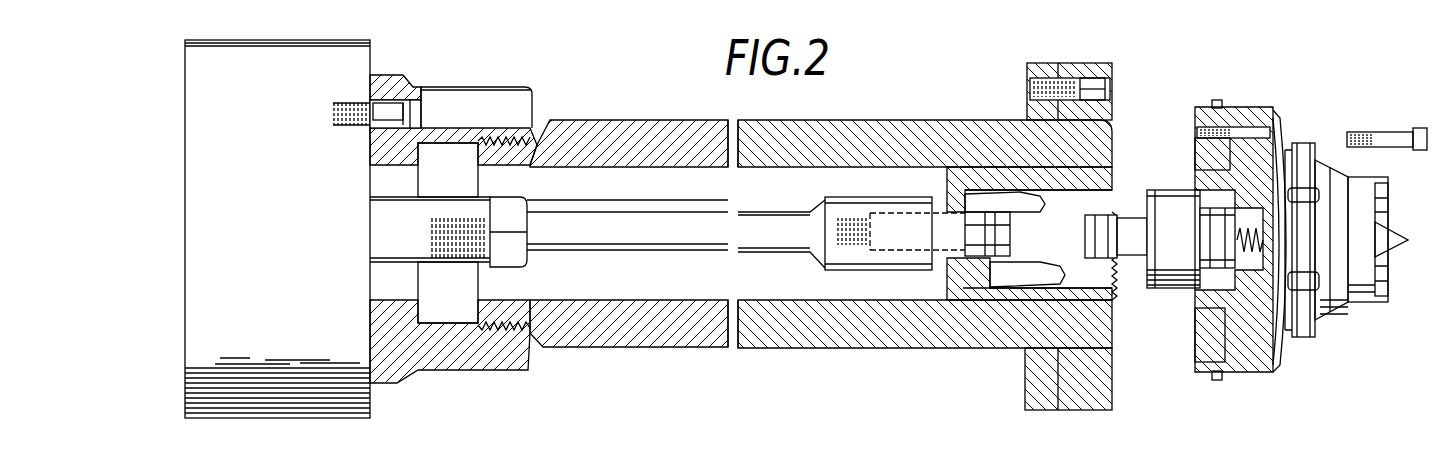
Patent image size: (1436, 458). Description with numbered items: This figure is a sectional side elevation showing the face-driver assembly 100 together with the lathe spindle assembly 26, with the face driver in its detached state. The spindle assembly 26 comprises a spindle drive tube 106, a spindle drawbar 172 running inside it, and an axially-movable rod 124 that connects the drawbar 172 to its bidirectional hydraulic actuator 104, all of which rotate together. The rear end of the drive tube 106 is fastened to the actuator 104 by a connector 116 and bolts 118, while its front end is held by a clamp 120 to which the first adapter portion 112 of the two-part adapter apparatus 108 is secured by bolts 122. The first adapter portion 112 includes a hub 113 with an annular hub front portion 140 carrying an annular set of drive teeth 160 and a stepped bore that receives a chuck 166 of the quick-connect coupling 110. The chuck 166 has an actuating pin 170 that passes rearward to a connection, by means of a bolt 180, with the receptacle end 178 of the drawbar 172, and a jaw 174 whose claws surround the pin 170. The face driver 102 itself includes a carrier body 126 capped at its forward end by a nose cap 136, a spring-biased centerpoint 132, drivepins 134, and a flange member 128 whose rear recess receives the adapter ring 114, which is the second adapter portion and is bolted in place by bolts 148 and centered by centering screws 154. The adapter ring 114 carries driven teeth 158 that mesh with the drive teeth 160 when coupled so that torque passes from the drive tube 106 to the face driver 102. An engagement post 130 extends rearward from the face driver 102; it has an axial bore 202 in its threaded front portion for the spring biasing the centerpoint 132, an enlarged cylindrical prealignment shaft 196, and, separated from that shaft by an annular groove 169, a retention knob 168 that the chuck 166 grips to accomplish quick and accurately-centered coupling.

The spindle assembly 26 is at (665, 57).
The face-driver assembly 100 is at (1137, 420).
The face driver 102 is at (1357, 230).
The hydraulic actuator 104 is at (372, 66).
The spindle drive tube 106 is at (826, 118).
The two-part adapter apparatus 108 is at (1199, 236).
The quick-connect coupling 110 is at (1074, 269).
The first adapter portion 112 is at (1067, 78).
The hub 113 is at (1022, 397).
The annular hub front portion 140 is at (1092, 403).
The adapter ring 114 is at (1197, 335).
The connector 116 is at (502, 88).
The bolts 118 is at (422, 98).
The clamp 120 is at (1030, 70).
The bolts 122 is at (1100, 82).
The axially-movable rod 124 is at (380, 223).
The carrier body 126 is at (1302, 343).
The flange member 128 is at (1263, 373).
The engagement post 130 is at (1195, 292).
The centerpoint 132 is at (1392, 235).
The drivepins 134 is at (1385, 200).
The nose cap 136 is at (1355, 318).
The bolts 148 is at (1398, 133).
The centering screws 154 is at (1213, 370).
The driven teeth 158 is at (1198, 160).
The drive teeth 160 is at (1113, 143).
The chuck 166 is at (985, 173).
The retention knob 168 is at (1090, 230).
The annular groove 169 is at (1110, 233).
The actuating pin 170 is at (930, 270).
The spindle drawbar 172 is at (665, 235).
The jaw 174 is at (983, 352).
The receptacle end 178 is at (838, 193).
The bolt 180 is at (832, 278).
The prealignment shaft 196 is at (1192, 224).
The axial bore 202 is at (1210, 242).